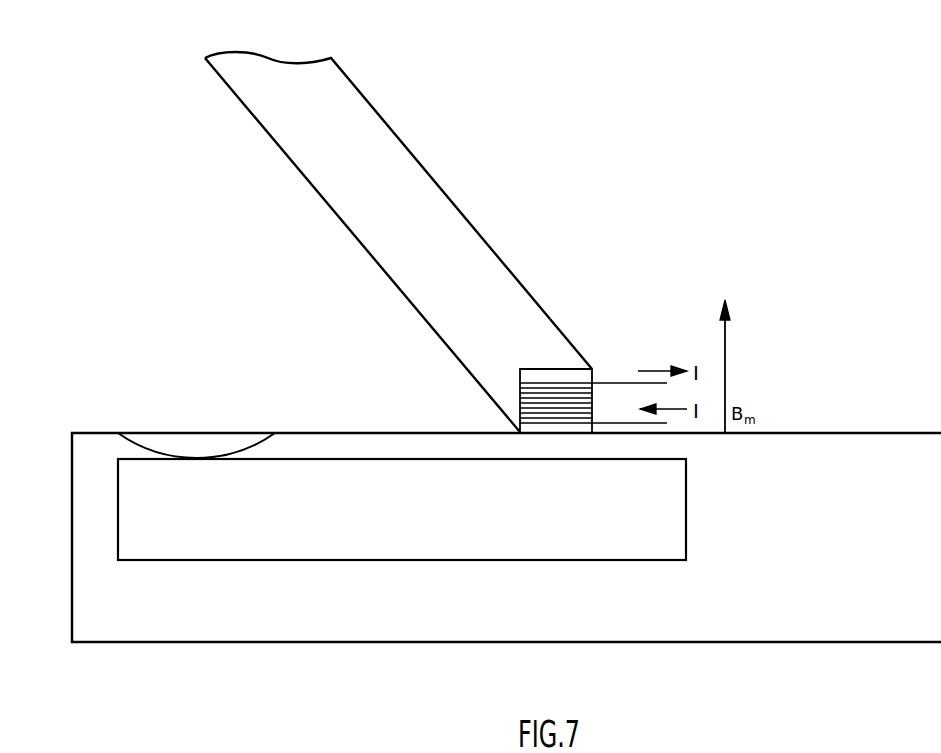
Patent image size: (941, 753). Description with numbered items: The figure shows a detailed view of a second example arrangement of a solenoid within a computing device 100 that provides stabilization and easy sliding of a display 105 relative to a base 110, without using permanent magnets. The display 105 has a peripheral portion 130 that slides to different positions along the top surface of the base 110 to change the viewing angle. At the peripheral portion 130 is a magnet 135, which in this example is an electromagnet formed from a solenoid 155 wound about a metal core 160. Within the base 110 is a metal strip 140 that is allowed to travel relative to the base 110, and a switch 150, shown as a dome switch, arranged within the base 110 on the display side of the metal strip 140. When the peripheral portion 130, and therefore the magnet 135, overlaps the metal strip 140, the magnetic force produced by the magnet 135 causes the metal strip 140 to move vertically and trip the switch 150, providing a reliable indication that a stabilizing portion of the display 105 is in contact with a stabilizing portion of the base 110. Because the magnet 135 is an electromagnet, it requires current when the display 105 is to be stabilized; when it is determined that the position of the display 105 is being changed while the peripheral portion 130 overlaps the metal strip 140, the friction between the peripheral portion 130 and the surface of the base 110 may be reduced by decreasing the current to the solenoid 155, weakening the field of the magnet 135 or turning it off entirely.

The computing device 100 is at (801, 227).
The display 105 is at (458, 207).
The base 110 is at (842, 433).
The peripheral portion 130 is at (570, 342).
The magnet 135 is at (530, 400).
The metal strip 140 is at (288, 560).
The switch 150 is at (118, 433).
The solenoid 155 is at (578, 382).
The metal core 160 is at (527, 375).